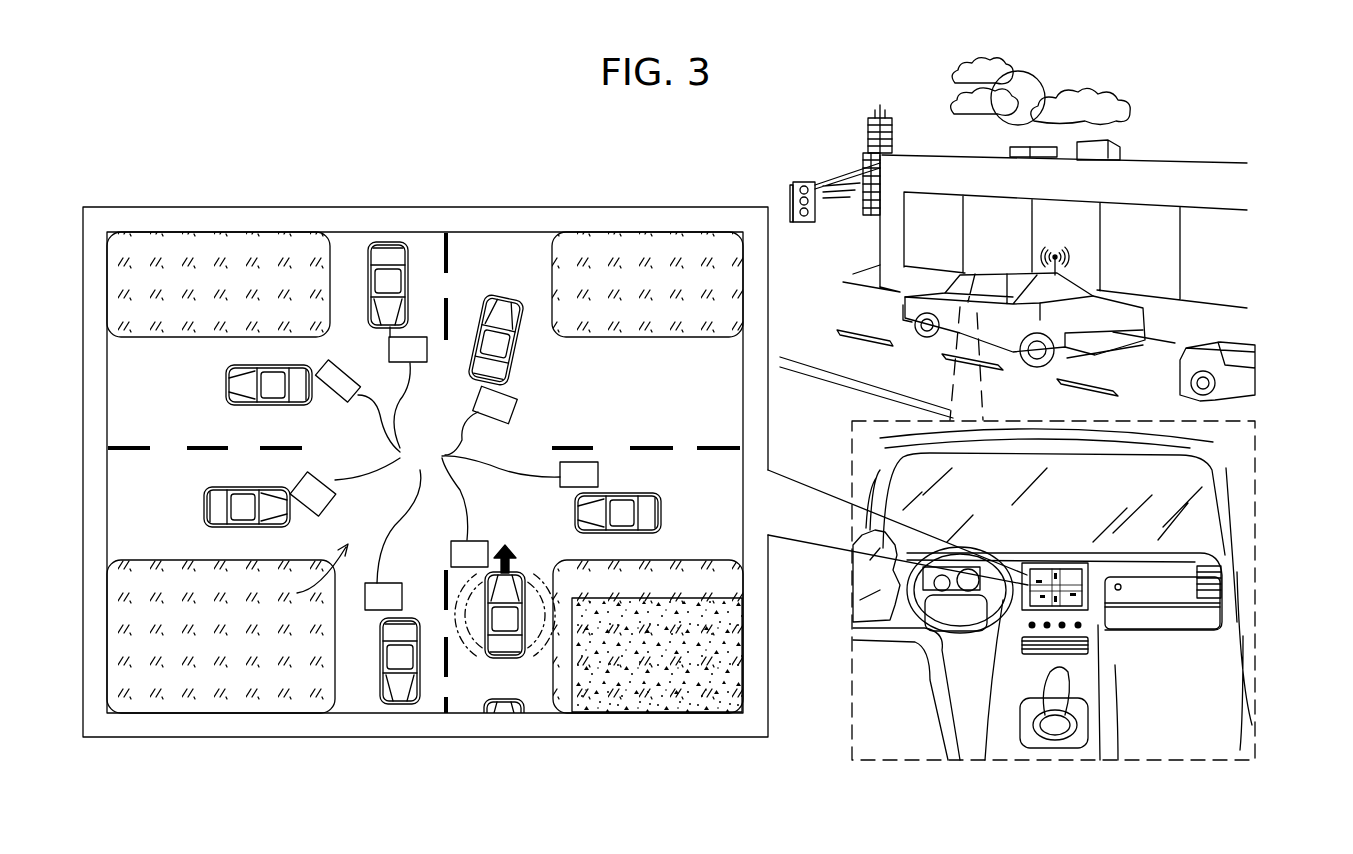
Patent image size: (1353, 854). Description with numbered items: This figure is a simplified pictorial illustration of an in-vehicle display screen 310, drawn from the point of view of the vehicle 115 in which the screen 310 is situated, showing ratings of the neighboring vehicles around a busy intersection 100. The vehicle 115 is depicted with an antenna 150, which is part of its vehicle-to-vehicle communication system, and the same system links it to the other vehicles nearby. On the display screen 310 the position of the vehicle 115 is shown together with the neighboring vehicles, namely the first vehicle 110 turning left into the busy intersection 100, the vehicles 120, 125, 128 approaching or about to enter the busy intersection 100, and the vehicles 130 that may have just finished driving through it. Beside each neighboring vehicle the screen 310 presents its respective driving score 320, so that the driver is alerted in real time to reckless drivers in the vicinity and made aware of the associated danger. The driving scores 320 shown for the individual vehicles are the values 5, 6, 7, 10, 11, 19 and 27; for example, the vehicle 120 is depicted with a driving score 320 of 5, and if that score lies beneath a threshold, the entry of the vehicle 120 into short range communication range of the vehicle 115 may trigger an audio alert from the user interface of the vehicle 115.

The busy intersection 100 is at (306, 573).
The first vehicle 110 is at (206, 516).
The vehicle 115 is at (520, 620).
The vehicle 120 is at (661, 512).
The vehicle 125 is at (390, 250).
The vehicle 128 is at (522, 690).
The vehicles 130 is at (226, 392).
The antenna 150 is at (1054, 257).
The in-vehicle display screen 310 is at (376, 715).
The driving scores 320 is at (447, 473).
The vehicle identifier box 5 is at (579, 474).
The vehicle identifier box 6 is at (469, 554).
The vehicle identifier box 7 is at (338, 381).
The vehicle identifier box 10 is at (408, 344).
The vehicle identifier box 11 is at (383, 596).
The vehicle identifier box 19 is at (313, 494).
The vehicle identifier box 27 is at (495, 404).